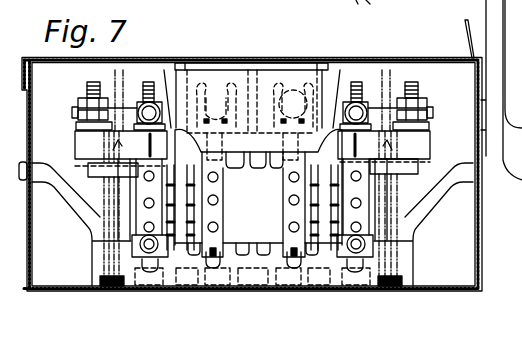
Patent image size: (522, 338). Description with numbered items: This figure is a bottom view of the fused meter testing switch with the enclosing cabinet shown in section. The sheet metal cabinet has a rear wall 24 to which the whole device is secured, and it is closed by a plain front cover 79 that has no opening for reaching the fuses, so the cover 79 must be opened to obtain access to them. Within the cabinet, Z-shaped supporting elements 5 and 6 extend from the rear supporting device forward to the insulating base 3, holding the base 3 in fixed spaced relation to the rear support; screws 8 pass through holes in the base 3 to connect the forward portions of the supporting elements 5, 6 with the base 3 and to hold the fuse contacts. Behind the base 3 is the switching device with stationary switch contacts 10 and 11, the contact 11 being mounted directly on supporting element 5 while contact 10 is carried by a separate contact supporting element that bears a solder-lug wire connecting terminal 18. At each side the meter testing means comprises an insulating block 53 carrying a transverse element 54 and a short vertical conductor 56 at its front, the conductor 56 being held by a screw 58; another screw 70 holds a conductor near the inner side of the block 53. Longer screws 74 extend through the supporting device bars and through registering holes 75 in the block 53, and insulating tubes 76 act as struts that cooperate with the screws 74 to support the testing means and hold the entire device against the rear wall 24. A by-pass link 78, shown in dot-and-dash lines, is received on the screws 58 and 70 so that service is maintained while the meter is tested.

The insulating base 3 is at (336, 86).
The supporting element 5 is at (228, 190).
The supporting element 6 is at (294, 105).
The screw 8 is at (217, 105).
The stationary switch contact 10 is at (165, 197).
The stationary switch contact 11 is at (194, 222).
The wire connecting terminal 18 is at (163, 206).
The rear wall 24 is at (440, 288).
The insulating block 53 is at (82, 130).
The transverse element 54 is at (88, 168).
The short vertical conductor 56 is at (78, 123).
The screw 58 is at (86, 96).
The screw 70 is at (145, 97).
The longer screw 74 is at (404, 143).
The registering hole 75 is at (108, 160).
The tube 76 is at (102, 188).
The by-pass link 78 is at (109, 97).
The front cover 79 is at (421, 58).